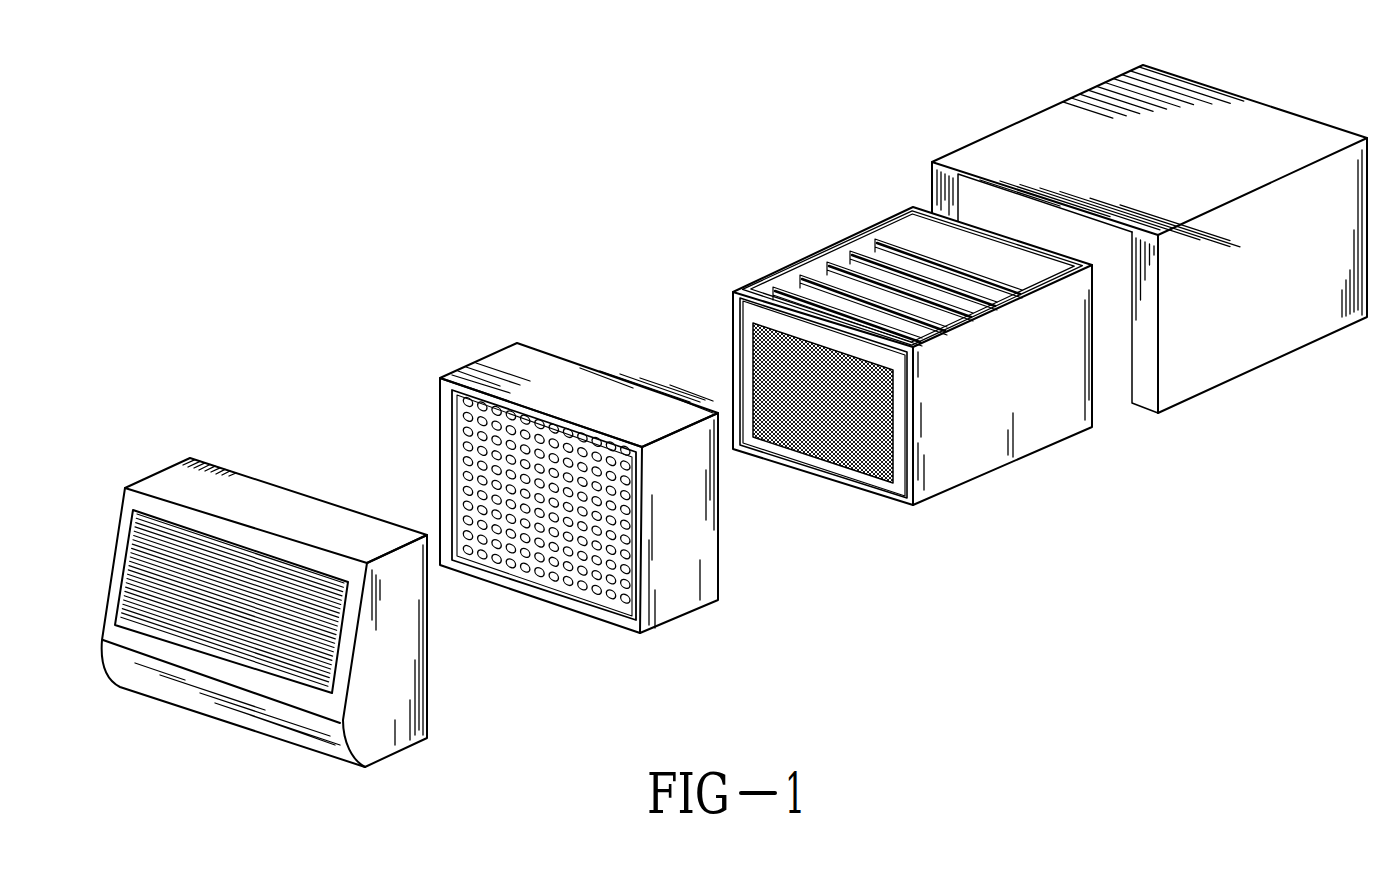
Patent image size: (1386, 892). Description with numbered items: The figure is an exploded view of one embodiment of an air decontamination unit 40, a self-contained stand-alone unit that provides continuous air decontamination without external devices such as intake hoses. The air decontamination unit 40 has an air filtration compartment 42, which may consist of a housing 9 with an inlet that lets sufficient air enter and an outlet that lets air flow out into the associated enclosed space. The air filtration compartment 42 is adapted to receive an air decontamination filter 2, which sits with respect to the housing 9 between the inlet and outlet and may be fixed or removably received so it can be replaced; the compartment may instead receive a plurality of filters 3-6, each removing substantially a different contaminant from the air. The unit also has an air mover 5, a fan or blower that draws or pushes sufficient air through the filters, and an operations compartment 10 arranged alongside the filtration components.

The air decontamination filter 2 is at (835, 252).
The plurality of filters 3-6 is at (858, 217).
The air mover 5 is at (452, 363).
The housing 9 is at (870, 361).
The operations compartment 10 is at (182, 457).
The air decontamination unit 40 is at (1090, 483).
The air filtration compartment 42 is at (1098, 405).